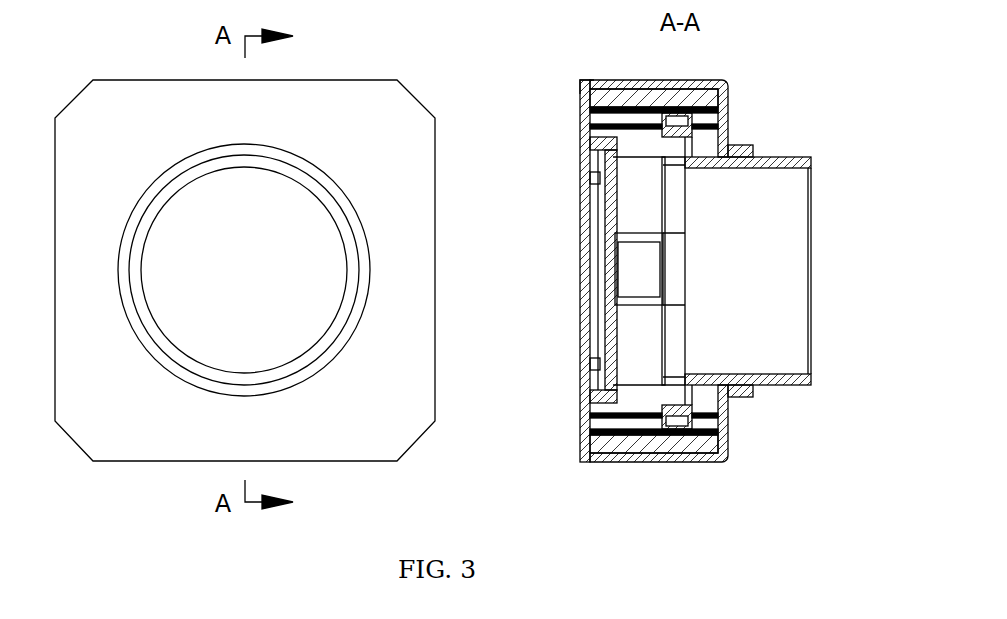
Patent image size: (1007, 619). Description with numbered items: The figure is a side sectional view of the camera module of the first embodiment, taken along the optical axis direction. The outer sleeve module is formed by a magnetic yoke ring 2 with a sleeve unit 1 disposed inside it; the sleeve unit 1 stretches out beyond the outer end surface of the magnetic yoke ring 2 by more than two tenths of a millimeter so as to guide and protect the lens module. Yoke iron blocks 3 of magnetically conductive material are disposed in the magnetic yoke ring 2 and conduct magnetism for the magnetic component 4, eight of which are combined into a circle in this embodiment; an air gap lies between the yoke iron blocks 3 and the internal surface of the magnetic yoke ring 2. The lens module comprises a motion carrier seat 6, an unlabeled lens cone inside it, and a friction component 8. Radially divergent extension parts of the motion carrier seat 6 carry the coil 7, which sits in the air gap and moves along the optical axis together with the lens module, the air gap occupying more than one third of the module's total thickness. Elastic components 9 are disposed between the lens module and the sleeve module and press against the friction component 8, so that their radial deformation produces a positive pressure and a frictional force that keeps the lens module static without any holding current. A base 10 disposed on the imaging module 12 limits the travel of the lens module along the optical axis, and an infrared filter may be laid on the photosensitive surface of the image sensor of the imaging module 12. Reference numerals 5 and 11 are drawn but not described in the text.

The sleeve unit 1 is at (747, 150).
The magnetic yoke ring 2 is at (720, 105).
The yoke iron blocks 3 is at (652, 138).
The magnetic component 4 is at (582, 80).
The front protective glass 5 is at (603, 107).
The motion carrier seat 6 is at (810, 385).
The coil 7 is at (700, 425).
The friction component 8 is at (725, 450).
The elastic components 9 is at (665, 435).
The base 10 is at (603, 397).
The sealing element 11 is at (587, 407).
The imaging module 12 is at (588, 323).